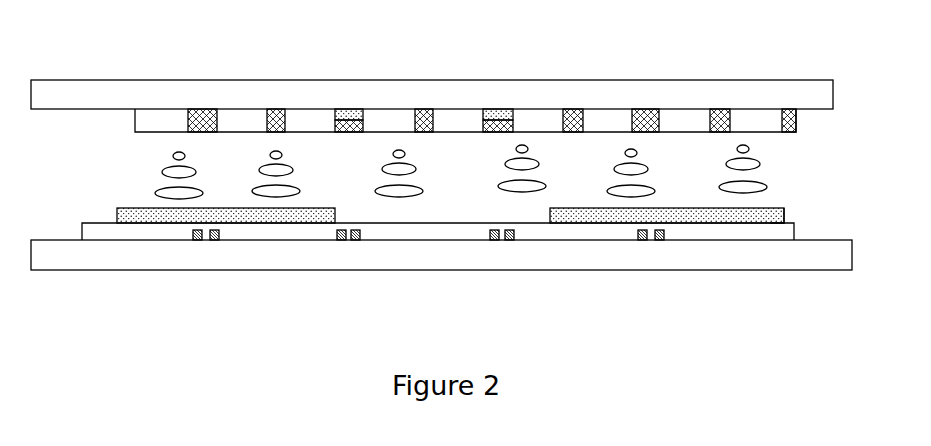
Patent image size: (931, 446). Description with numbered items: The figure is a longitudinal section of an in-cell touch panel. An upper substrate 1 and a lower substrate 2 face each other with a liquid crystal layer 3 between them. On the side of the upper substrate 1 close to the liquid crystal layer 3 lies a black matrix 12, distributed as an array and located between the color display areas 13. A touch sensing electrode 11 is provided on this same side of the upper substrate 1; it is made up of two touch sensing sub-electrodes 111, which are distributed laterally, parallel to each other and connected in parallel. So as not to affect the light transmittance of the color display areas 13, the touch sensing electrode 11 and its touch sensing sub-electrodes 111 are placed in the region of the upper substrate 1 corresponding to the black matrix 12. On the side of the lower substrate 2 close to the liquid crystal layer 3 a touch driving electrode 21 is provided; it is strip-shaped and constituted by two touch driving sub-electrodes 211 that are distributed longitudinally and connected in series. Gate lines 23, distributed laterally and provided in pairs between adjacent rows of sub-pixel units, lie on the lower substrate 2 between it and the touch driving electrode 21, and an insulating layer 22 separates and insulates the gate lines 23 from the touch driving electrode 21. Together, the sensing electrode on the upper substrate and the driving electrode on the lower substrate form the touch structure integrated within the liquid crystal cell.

The upper substrate 1 is at (74, 98).
The touch sensing electrode 11 is at (459, 72).
The touch sensing sub-electrode 111 is at (503, 115).
The black matrix 12 is at (202, 109).
The color display area 13 is at (683, 118).
The lower substrate 2 is at (69, 254).
The touch driving electrode 21 is at (480, 259).
The touch driving sub-electrode 211 is at (773, 213).
The insulating layer 22 is at (733, 233).
The gate line 23 is at (645, 240).
The liquid crystal layer 3 is at (755, 167).